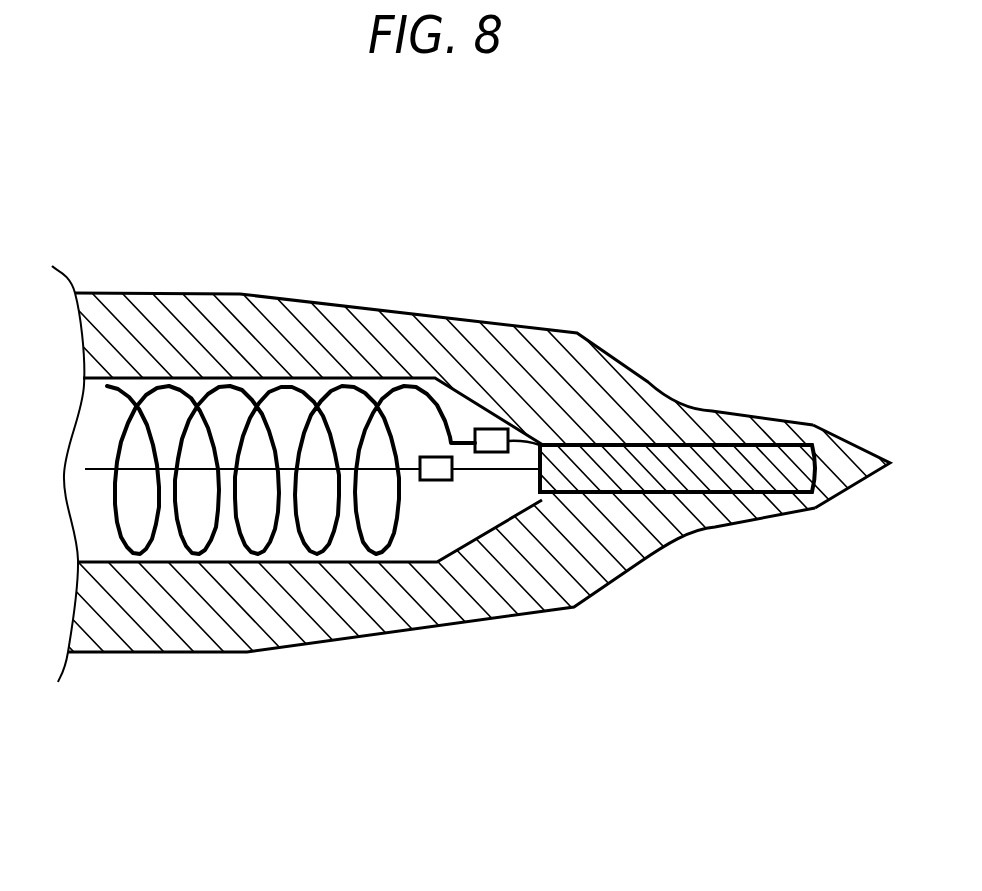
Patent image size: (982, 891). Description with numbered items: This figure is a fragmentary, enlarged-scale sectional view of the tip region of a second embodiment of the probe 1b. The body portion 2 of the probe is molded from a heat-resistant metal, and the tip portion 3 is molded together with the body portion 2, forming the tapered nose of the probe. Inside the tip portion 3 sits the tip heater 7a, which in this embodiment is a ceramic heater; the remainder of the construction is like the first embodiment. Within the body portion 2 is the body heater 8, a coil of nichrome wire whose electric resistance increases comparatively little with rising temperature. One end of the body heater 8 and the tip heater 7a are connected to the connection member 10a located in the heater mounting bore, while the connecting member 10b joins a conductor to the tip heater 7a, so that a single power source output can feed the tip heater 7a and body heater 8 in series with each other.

The probe 1b is at (432, 288).
The body portion 2 is at (173, 655).
The tip portion 3 is at (772, 422).
The tip heater 7a is at (652, 445).
The body heater 8 is at (240, 390).
The connection member 10a is at (498, 450).
The connecting member 10b is at (437, 482).